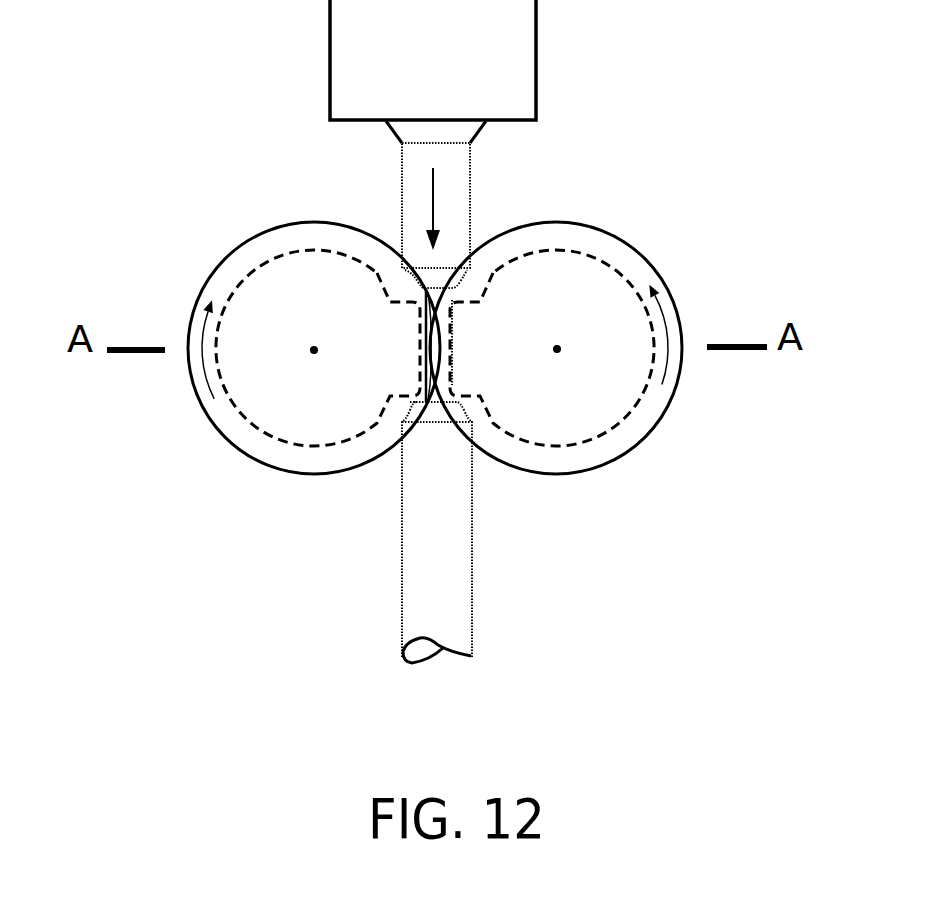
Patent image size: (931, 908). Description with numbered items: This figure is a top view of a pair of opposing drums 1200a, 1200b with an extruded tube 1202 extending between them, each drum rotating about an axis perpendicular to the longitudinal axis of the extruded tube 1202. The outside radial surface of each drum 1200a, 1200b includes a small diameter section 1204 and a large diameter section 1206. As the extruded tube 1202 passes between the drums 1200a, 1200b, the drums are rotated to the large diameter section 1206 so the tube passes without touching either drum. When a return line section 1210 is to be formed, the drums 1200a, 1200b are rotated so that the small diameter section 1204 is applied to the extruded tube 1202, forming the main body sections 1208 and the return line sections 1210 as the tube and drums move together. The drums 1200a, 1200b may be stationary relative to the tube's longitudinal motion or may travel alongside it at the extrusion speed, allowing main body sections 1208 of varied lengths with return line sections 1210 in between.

The extruded tube 1202 is at (398, 202).
The drum 1200a is at (245, 363).
The drum 1200b is at (633, 250).
The small diameter section 1204 is at (452, 353).
The large diameter section 1206 is at (243, 415).
The main body section 1208 is at (472, 589).
The return line section 1210 is at (427, 343).